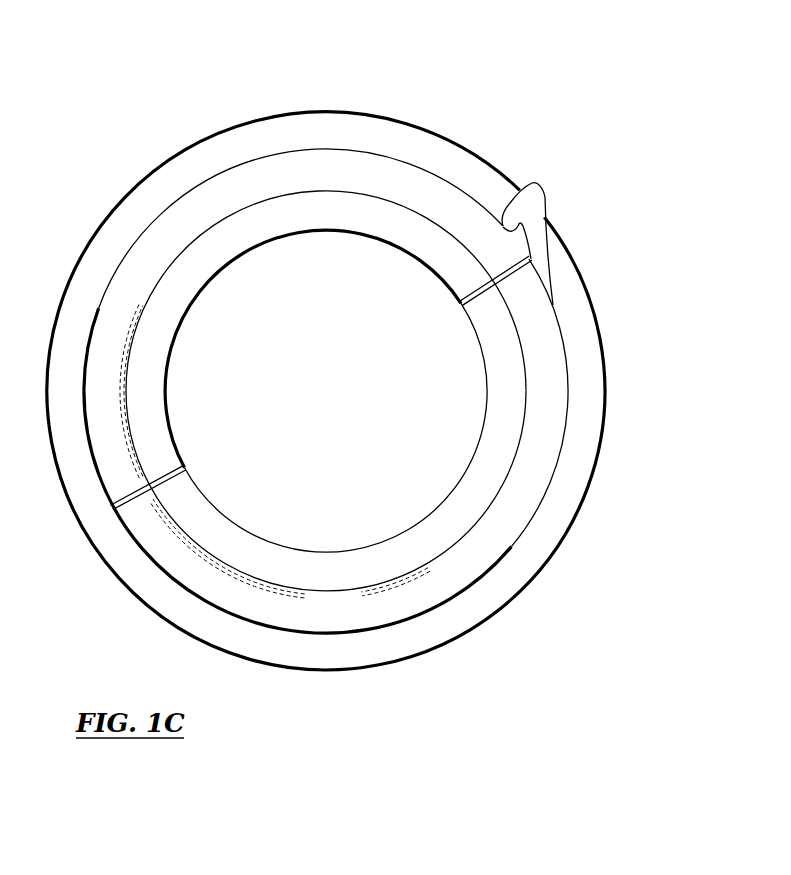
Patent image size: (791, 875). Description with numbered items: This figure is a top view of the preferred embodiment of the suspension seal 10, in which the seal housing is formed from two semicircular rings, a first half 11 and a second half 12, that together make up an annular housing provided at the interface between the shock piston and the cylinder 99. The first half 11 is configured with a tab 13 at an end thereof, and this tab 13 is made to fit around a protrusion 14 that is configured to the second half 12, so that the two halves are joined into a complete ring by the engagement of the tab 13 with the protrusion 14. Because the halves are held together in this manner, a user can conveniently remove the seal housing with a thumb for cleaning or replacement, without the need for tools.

The suspension seal 10 is at (375, 354).
The first half 11 is at (510, 560).
The second half 12 is at (268, 183).
The tab 13 is at (573, 228).
The protrusion 14 is at (520, 233).
The cylinder 99 is at (578, 296).